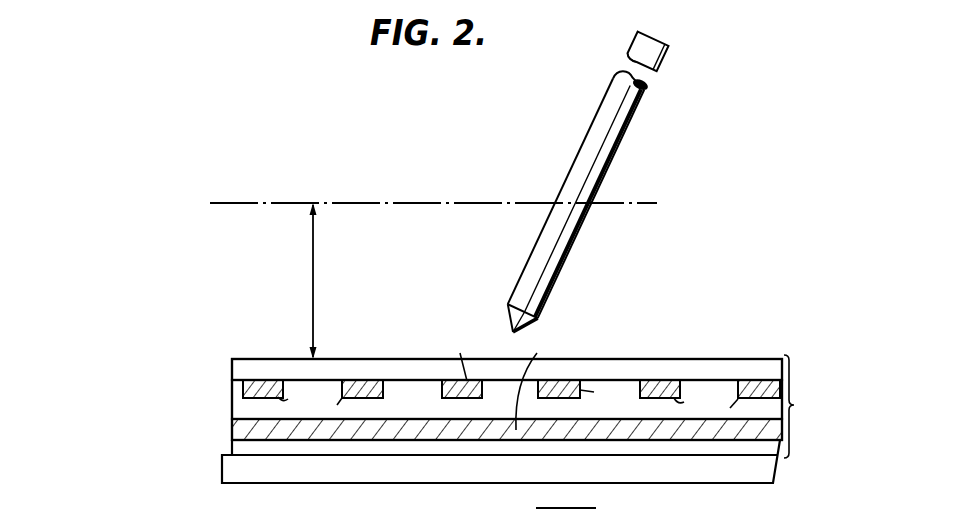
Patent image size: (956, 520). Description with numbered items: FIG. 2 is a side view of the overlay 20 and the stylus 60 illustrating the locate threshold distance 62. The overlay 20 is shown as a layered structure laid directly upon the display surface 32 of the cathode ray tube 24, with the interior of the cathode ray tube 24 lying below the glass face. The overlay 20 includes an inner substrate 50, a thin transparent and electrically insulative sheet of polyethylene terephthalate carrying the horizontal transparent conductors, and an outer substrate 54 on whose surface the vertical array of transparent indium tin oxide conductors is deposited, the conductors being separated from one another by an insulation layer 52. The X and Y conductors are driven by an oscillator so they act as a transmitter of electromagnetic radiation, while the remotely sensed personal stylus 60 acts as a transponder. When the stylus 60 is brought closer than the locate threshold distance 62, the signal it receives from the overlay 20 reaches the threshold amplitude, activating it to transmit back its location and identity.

The overlay 20 is at (810, 401).
The cathode ray tube 24 is at (515, 495).
The display surface 32 is at (766, 468).
The inner substrate 50 is at (233, 452).
The insulation layer 52 is at (233, 402).
The outer substrate 54 is at (294, 367).
The stylus 60 is at (606, 149).
The locate threshold distance 62 is at (313, 277).